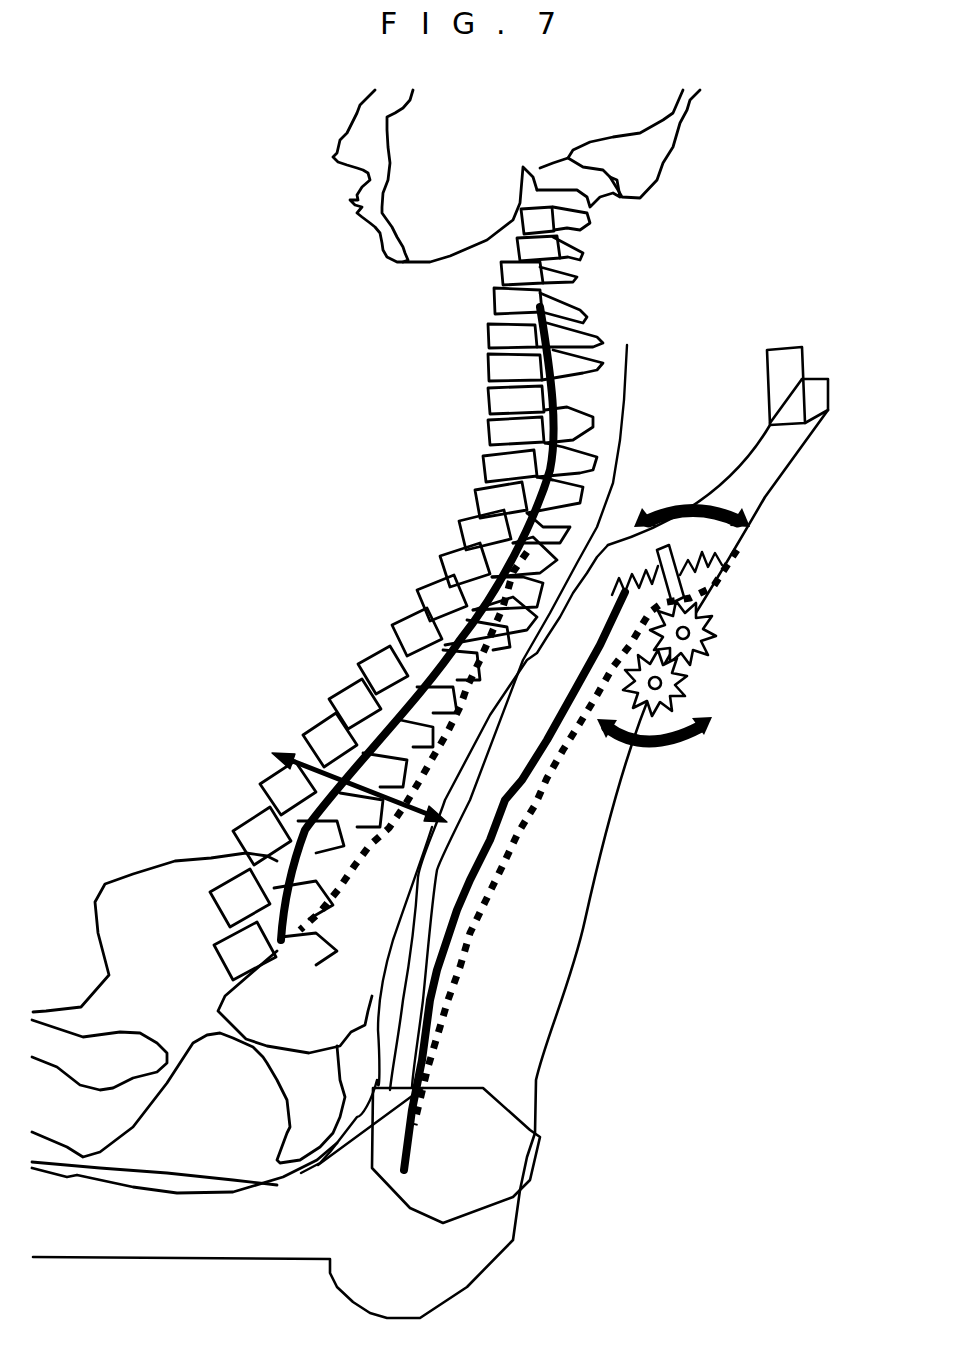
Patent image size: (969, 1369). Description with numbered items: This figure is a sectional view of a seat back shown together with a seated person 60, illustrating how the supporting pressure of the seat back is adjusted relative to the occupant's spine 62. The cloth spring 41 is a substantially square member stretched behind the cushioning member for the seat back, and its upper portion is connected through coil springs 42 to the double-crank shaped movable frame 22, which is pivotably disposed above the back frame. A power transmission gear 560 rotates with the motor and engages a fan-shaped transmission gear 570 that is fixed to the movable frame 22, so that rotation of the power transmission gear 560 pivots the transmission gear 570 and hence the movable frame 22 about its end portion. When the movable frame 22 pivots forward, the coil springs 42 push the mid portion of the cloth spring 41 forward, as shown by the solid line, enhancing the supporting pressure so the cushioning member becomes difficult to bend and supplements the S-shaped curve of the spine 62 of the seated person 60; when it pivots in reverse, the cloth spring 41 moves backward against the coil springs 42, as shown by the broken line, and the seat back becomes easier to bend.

The seated person 60 is at (128, 356).
The spine 62 is at (340, 693).
The movable frame 22 is at (660, 572).
The coil springs 42 is at (650, 566).
The transmission gear 570 is at (713, 639).
The power transmission gear 560 is at (692, 688).
The cloth spring 41 is at (516, 845).